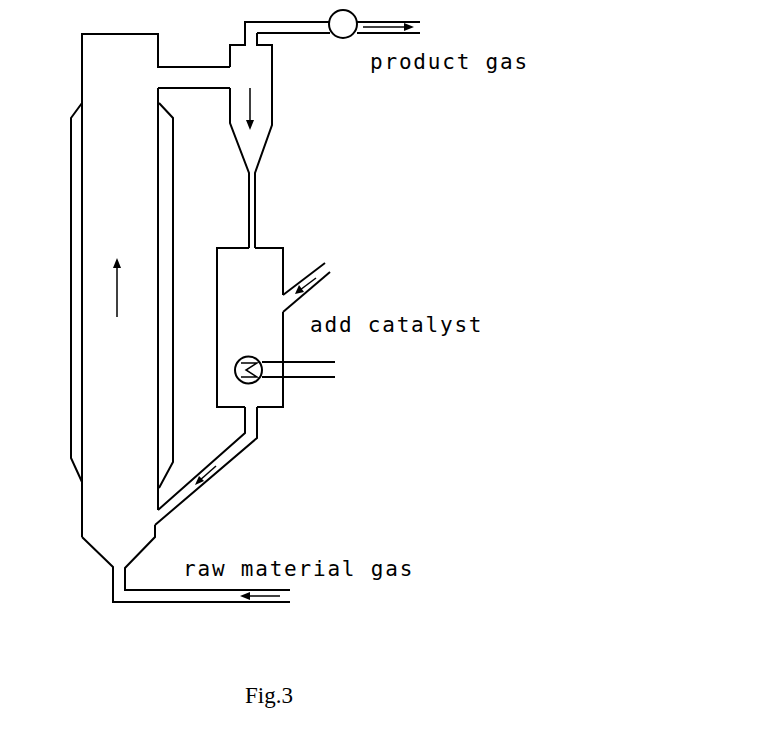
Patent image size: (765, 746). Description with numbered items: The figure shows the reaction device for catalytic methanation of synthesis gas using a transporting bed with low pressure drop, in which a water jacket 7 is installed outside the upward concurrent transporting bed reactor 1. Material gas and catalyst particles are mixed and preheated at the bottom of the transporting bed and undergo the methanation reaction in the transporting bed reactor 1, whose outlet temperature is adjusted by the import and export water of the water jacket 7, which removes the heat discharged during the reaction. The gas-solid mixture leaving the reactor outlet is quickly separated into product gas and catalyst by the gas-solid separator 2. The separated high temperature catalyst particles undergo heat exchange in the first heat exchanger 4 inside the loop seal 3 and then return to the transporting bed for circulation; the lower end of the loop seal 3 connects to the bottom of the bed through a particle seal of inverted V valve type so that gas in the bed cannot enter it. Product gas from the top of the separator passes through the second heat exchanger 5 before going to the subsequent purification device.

The upward concurrent transporting bed reactor 1 is at (105, 355).
The gas-solid separator 2 is at (243, 83).
The loop seal 3 is at (273, 327).
The first heat exchanger 4 is at (297, 378).
The second heat exchanger 5 is at (374, 43).
The water jacket 7 is at (70, 153).